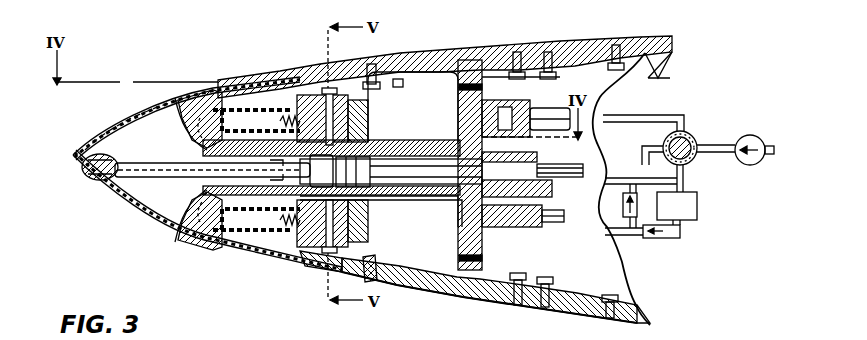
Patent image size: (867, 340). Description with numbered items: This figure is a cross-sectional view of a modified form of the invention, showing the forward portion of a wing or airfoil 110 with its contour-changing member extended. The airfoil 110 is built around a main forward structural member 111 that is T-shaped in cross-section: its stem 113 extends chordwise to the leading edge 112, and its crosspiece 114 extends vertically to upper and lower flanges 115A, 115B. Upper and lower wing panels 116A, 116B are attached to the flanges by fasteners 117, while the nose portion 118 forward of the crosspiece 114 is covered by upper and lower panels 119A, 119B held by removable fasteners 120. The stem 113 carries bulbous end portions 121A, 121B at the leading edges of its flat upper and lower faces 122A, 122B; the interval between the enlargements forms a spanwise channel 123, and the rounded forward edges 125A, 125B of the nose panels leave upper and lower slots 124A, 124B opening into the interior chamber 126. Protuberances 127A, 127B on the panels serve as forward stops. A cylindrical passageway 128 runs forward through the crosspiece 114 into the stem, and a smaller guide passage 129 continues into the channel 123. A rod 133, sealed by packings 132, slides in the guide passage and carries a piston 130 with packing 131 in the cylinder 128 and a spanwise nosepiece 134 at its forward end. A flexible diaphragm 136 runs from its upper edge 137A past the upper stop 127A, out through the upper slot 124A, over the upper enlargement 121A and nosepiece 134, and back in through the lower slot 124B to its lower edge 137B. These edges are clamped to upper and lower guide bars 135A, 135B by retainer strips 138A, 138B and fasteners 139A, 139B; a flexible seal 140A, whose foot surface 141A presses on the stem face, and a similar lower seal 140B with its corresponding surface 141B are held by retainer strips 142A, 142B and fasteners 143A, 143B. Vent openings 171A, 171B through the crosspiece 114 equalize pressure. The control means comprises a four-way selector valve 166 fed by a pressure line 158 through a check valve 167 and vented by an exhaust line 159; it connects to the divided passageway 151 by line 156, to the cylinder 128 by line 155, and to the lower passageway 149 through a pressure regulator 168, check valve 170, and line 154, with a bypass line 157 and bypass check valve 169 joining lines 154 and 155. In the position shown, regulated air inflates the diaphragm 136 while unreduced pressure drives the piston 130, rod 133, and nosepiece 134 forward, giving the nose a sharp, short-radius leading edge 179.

The wing or airfoil 110 is at (606, 31).
The main forward structural member 111 is at (464, 42).
The leading edge 112 is at (172, 197).
The stem portion 113 is at (402, 210).
The crosspiece 114 is at (458, 258).
The upper flange 115A is at (657, 68).
The lower flange 115B is at (636, 298).
The upper wing panel 116A is at (672, 38).
The lower wing panel 116B is at (648, 321).
The fasteners 117 is at (543, 45).
The airfoil nose portion 118 is at (310, 50).
The upper nose panel 119A is at (407, 52).
The lower nose panel 119B is at (415, 290).
The fasteners 120 is at (374, 62).
The upper bulbous end portion 121A is at (183, 100).
The lower bulbous end portion 121B is at (190, 229).
The upper face of stem portion 122A is at (405, 142).
The lower face of stem portion 122B is at (428, 196).
The spanwise groove or channel 123 is at (137, 160).
The upper slot 124A is at (207, 98).
The lower slot 124B is at (202, 246).
The upper panel forward edge 125A is at (233, 92).
The lower panel forward edge 125B is at (253, 237).
The airfoil cavity or chamber 126 is at (448, 110).
The upper protuberance 127A is at (281, 120).
The lower protuberance 127B is at (281, 222).
The cylindrical passageway 128 is at (391, 171).
The guide passage 129 is at (170, 179).
The piston 130 is at (350, 199).
The packing 131 is at (353, 133).
The packings 132 is at (262, 200).
The rod 133 is at (138, 149).
The nosepiece 134 is at (112, 183).
The upper guide bar 135A is at (342, 120).
The lower guide bar 135B is at (350, 222).
The flexible diaphragm 136 is at (88, 191).
The upper edge of diaphragm 137A is at (350, 110).
The lower edge of diaphragm 137B is at (378, 279).
The upper retainer strip 138A is at (341, 89).
The lower retainer strip 138B is at (313, 254).
The fasteners 139A is at (355, 264).
The clamping fasteners 139B is at (403, 85).
The upper flexible seal 140A is at (230, 108).
The lower flexible seal 140B is at (263, 227).
The lower surface of seal foot 141A is at (283, 150).
The lower rod coupling 141B is at (273, 189).
The retainer strip 142A is at (302, 95).
The retainer strip 142B is at (325, 248).
The fasteners 143A is at (262, 100).
The fasteners 143B is at (270, 203).
The lower passageway 149 is at (408, 203).
The divided passageway 151 is at (415, 140).
The lower passageway line 154 is at (553, 243).
The cylinder line 155 is at (603, 157).
The divided passageway line 156 is at (550, 108).
The bypass line 157 is at (623, 200).
The pressure line 158 is at (722, 143).
The vent or exhaust line 159 is at (641, 158).
The four-way selector valve 166 is at (690, 133).
The check valve 167 is at (752, 165).
The pressure regulator 168 is at (697, 207).
The bypass check valve 169 is at (552, 221).
The check valve 170 is at (668, 240).
The upper vent opening 171A is at (484, 88).
The lower vent opening 171B is at (484, 259).
The sharp, short-radius leading edge 179 is at (68, 156).